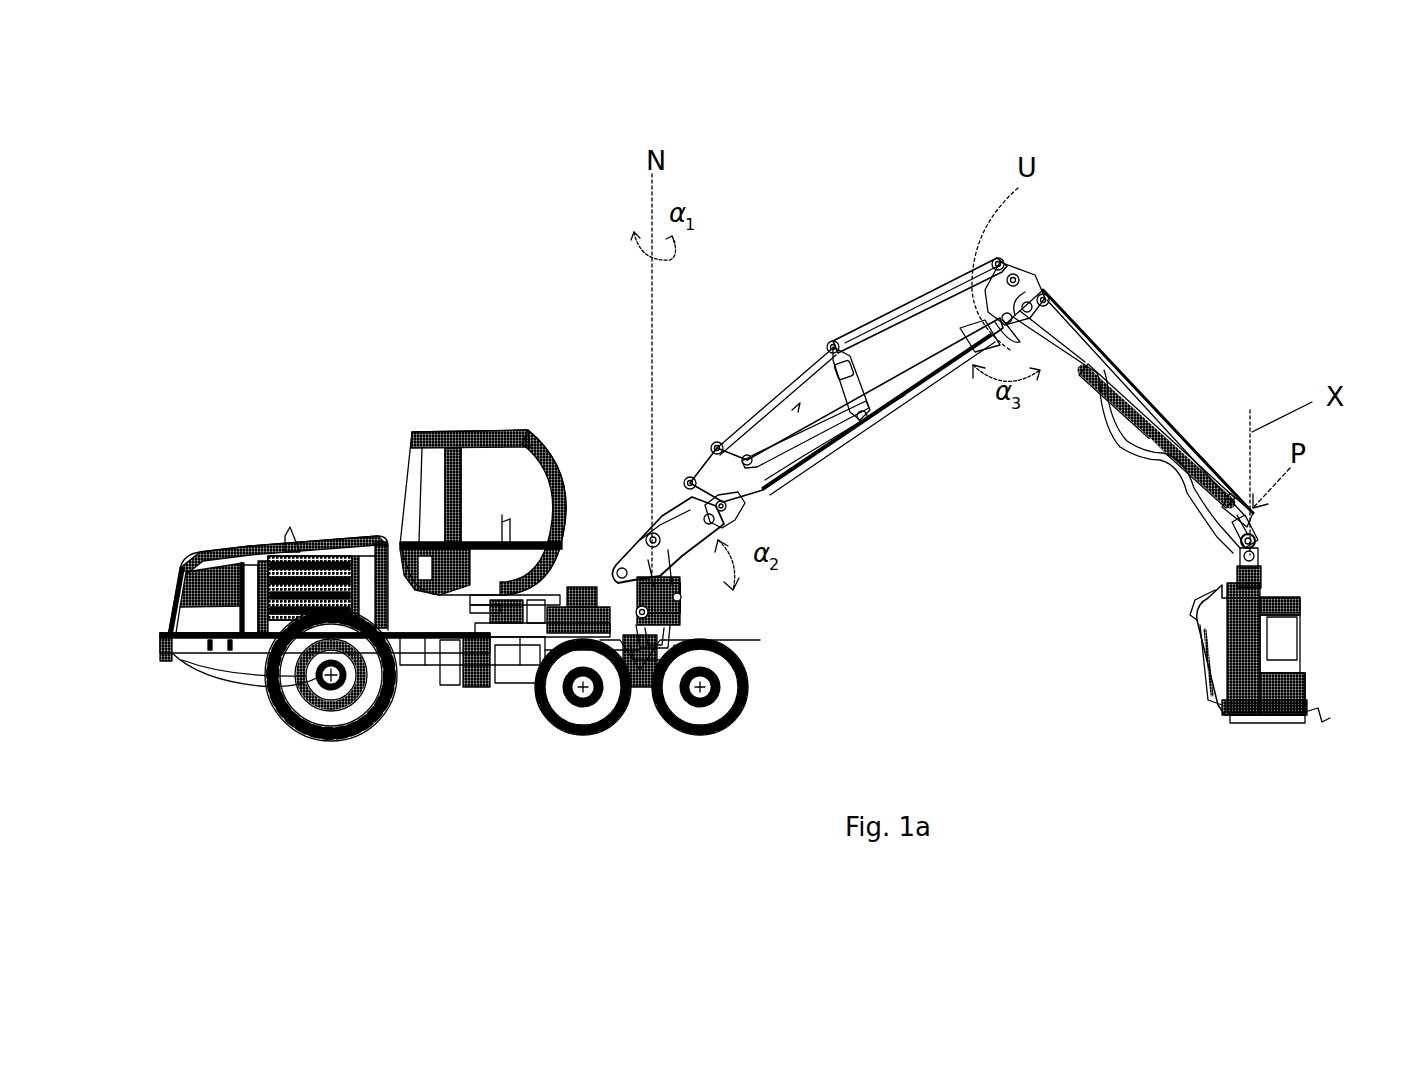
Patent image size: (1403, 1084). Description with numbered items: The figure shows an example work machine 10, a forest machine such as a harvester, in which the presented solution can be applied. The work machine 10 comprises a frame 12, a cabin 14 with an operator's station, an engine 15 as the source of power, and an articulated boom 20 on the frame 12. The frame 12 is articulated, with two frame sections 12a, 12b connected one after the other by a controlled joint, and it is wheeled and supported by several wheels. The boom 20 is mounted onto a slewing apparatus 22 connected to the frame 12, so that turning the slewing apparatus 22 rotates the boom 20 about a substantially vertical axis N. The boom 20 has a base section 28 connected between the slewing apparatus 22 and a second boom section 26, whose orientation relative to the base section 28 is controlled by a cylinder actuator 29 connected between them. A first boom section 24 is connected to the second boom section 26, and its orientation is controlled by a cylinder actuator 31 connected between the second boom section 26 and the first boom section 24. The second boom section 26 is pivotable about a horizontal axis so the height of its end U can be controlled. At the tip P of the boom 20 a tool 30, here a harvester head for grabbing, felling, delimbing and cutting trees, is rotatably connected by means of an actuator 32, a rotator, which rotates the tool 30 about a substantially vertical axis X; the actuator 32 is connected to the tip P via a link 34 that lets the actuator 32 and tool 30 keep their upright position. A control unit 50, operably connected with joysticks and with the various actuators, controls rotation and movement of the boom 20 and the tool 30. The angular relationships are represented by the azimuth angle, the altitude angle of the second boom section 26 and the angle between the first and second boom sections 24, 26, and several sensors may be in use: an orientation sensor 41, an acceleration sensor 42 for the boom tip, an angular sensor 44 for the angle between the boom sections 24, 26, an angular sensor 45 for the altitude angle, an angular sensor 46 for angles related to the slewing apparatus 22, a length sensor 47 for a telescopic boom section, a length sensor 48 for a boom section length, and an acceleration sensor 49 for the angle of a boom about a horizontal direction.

The work machine 10 is at (453, 317).
The frame 12 is at (460, 712).
The frame section 12a is at (420, 678).
The frame section 12b is at (520, 690).
The cabin 14 is at (424, 488).
The engine 15 is at (275, 555).
The articulated boom 20 is at (937, 283).
The slewing apparatus 22 is at (662, 607).
The first boom section 24 is at (1117, 363).
The second boom section 26 is at (871, 442).
The base section 28 is at (665, 548).
The cylinder actuator 29 is at (658, 530).
The tool 30 is at (1258, 738).
The cylinder actuator 31 is at (783, 412).
The actuator 32 is at (1260, 569).
The link 34 is at (1256, 545).
The orientation sensor 41 is at (1238, 560).
The acceleration sensor 42 is at (1233, 520).
The angular sensor 44 is at (1013, 300).
The angular sensor 45 is at (735, 520).
The angular sensor 46 is at (692, 597).
The length sensor 47 is at (1183, 430).
The length sensor 48 is at (880, 302).
The acceleration sensor 49 is at (1097, 377).
The control unit 50 is at (559, 460).